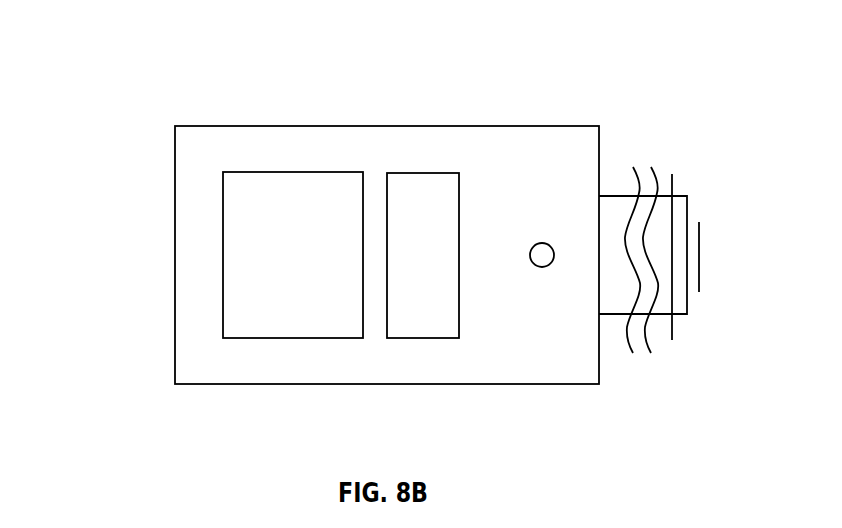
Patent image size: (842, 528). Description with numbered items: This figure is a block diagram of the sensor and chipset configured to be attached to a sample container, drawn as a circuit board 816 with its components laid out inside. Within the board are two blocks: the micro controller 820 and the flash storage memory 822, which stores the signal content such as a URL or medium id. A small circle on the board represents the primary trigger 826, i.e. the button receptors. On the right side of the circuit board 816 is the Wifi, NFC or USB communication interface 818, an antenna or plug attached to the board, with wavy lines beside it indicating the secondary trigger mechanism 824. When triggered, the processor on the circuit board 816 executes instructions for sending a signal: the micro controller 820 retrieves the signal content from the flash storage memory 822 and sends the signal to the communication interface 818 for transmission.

The circuit board 816 is at (141, 68).
The communication interface 818 is at (725, 240).
The micro controller 820 is at (293, 338).
The flash storage memory 822 is at (423, 338).
The secondary trigger mechanism 824 is at (644, 374).
The primary trigger 826 is at (540, 243).